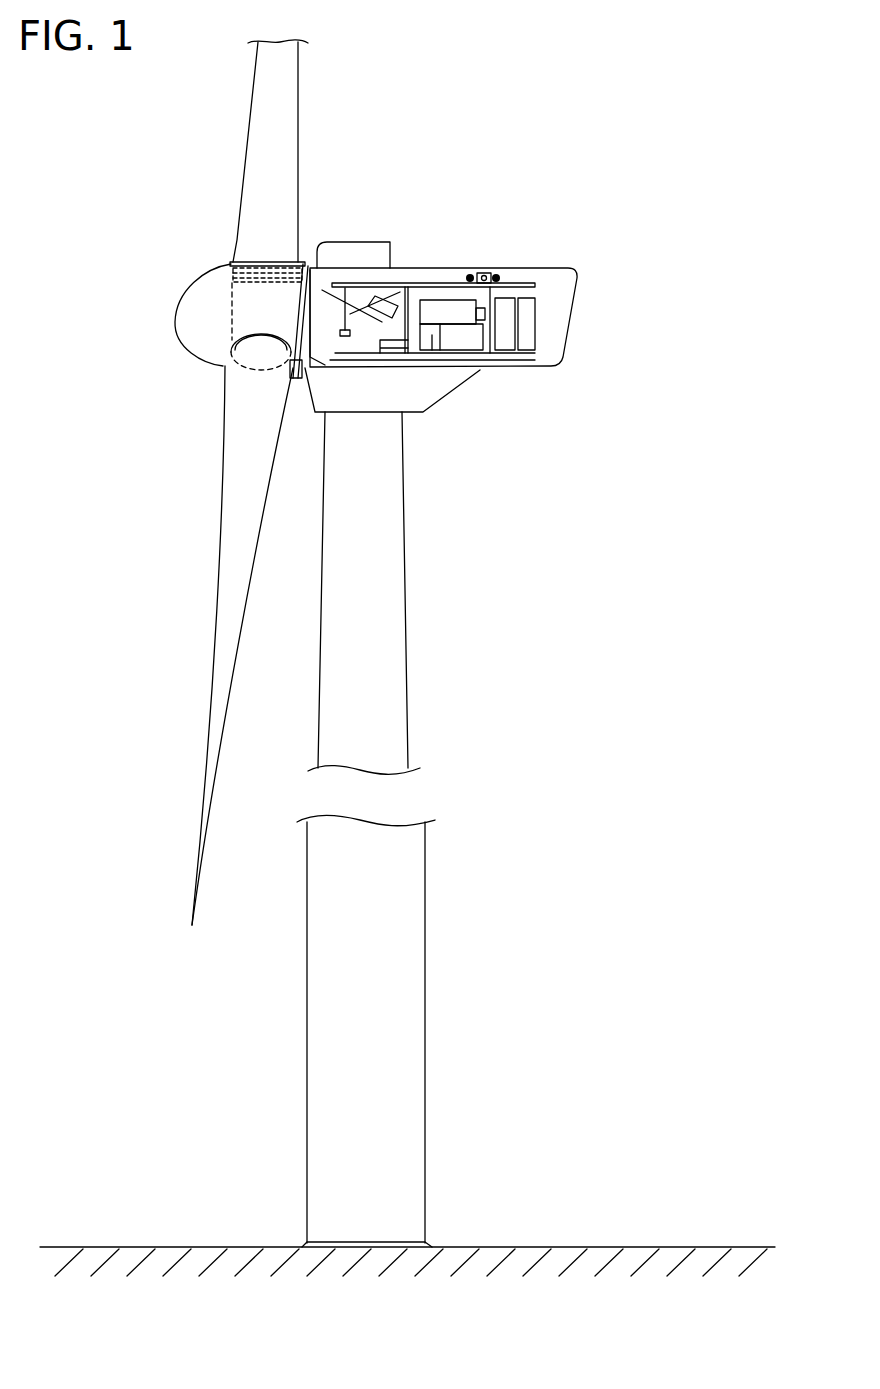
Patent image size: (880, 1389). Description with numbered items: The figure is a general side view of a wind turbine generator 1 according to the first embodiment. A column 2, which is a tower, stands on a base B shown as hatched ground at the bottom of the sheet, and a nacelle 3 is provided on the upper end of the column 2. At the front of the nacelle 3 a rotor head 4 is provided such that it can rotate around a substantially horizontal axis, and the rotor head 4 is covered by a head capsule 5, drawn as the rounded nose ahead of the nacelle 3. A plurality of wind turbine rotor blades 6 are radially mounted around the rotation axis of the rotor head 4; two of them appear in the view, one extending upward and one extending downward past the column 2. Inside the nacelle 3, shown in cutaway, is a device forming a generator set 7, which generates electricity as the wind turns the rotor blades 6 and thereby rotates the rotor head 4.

The wind turbine generator 1 is at (582, 127).
The column 2 is at (421, 955).
The nacelle 3 is at (443, 258).
The rotor head 4 is at (232, 328).
The head capsule 5 is at (204, 288).
The wind turbine rotor blades 6 is at (256, 115).
The generator set 7 is at (549, 325).
The base B is at (300, 1244).